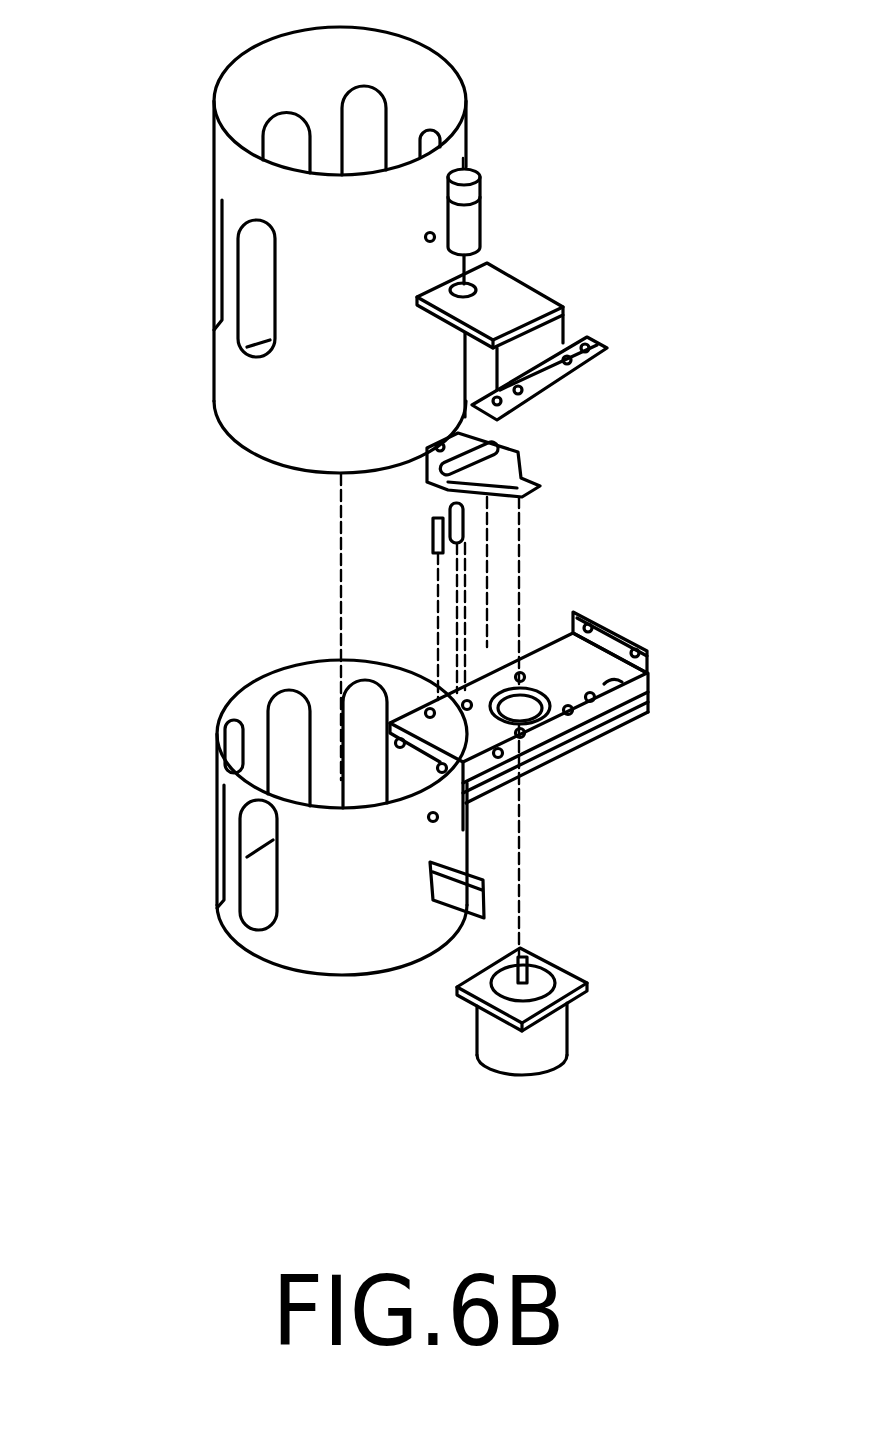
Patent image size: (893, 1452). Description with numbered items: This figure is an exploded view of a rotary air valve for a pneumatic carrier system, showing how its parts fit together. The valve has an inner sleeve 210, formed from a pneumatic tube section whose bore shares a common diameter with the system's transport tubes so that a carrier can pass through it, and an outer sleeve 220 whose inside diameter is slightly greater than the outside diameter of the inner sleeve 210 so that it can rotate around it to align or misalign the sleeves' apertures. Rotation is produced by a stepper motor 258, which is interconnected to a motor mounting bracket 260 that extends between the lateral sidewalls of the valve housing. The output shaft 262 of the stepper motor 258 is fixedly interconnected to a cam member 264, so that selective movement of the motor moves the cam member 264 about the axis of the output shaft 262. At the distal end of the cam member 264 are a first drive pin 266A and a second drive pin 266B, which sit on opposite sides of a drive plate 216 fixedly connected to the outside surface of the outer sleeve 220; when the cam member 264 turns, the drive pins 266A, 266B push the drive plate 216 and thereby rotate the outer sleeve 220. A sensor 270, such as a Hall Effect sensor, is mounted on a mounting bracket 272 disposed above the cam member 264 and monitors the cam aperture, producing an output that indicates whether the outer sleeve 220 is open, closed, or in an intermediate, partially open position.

The inner sleeve 210 is at (230, 170).
The sensor 270 is at (470, 212).
The mounting bracket 272 is at (548, 297).
The cam member 264 is at (518, 452).
The first drive pin 266A is at (433, 522).
The second drive pin 266B is at (433, 538).
The outer sleeve 220 is at (320, 945).
The drive plate 216 is at (460, 897).
The motor mounting bracket 260 is at (648, 698).
The output shaft 262 is at (540, 960).
The stepper motor 258 is at (560, 1037).